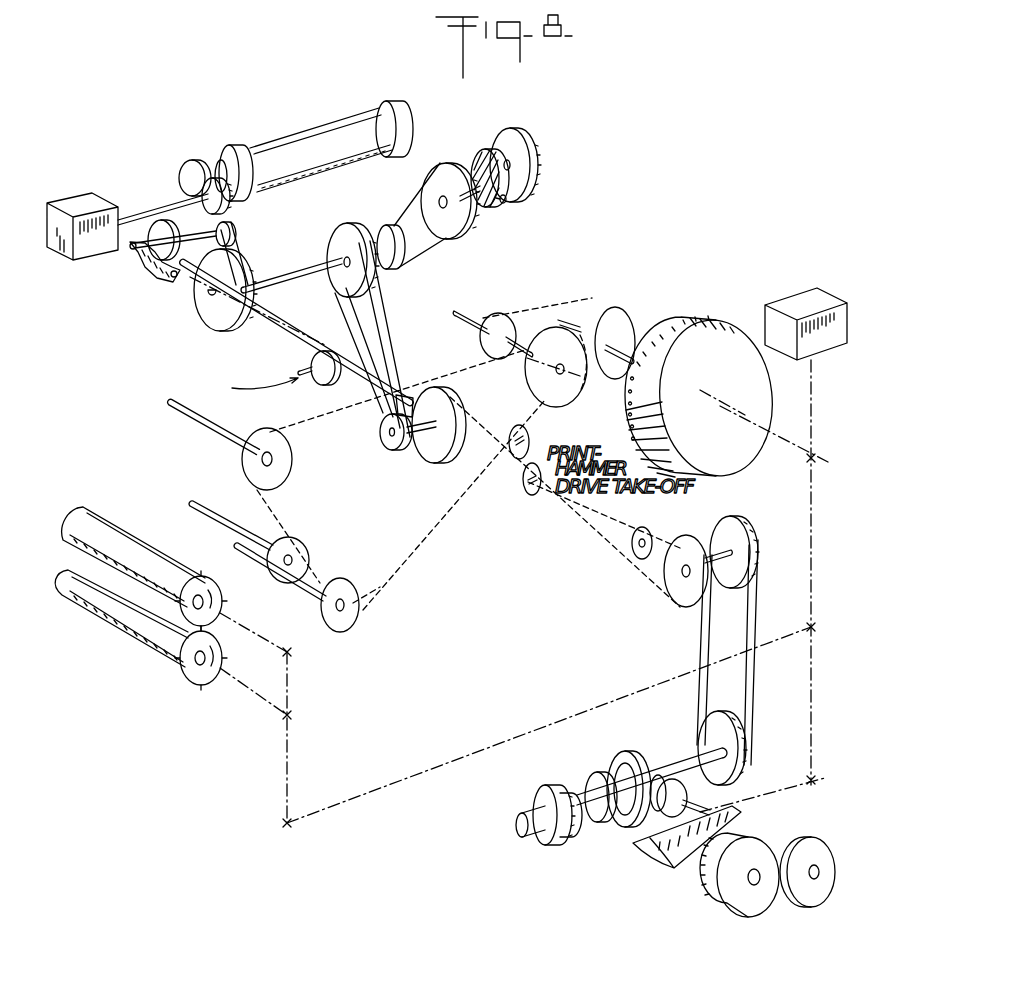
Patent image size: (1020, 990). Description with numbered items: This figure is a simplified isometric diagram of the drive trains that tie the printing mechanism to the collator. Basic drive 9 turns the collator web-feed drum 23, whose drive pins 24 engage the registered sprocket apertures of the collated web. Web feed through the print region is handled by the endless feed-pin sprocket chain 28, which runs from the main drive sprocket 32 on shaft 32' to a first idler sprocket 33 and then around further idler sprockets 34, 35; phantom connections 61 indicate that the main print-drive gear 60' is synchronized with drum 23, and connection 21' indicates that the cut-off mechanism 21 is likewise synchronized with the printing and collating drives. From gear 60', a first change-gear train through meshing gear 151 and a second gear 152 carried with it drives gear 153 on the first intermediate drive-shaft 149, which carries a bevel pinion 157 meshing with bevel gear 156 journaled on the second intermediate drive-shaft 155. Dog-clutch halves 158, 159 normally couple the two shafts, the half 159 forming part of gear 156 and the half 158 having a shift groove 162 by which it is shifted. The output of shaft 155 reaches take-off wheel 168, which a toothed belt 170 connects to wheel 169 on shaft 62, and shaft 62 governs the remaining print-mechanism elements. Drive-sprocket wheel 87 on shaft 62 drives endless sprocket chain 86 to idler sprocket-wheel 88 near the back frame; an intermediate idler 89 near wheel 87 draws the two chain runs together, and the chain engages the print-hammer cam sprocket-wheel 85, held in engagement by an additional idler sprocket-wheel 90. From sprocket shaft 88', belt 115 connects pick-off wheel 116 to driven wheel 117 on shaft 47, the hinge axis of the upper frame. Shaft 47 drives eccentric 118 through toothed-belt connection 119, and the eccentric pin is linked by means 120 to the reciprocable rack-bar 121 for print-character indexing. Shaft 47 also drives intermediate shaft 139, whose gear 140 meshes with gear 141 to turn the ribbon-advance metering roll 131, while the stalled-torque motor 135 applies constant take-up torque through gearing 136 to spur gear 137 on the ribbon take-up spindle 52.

The stalled-torque motor 135 is at (70, 201).
The take-up reel 52 is at (336, 121).
The spur gear 137 is at (194, 160).
The gearing 136 is at (212, 212).
The eccentric 118 is at (165, 221).
The link means 120 is at (142, 269).
The toothed-belt connection 119 is at (237, 262).
The driven wheel 117 is at (337, 272).
The hinge-axis shaft 47 is at (312, 240).
The toothed belt or sprocket-chain connection 115 is at (342, 300).
The rack-bar 121 is at (278, 323).
The ribbon-advance metering roll 131 is at (608, 173).
The intermediate drive shaft 139 is at (483, 210).
The gear 140 is at (505, 204).
The gear 141 is at (506, 128).
The basic drive 9 is at (808, 288).
The phantom connections 61 is at (812, 683).
The collator web-feed drum 23 is at (706, 359).
The drive pins 24 is at (692, 312).
The sprocket chain 28 is at (460, 444).
The sprocket shaft 32' is at (480, 335).
The main drive sprocket 32 is at (559, 357).
The first idler sprocket 33 is at (283, 456).
The idler sprocket 34 is at (283, 540).
The idler sprocket 35 is at (346, 578).
The cut-off mechanism 21 is at (141, 598).
The connection 21' is at (515, 720).
The pick-off wheel 116 is at (378, 446).
The sprocket shaft 88' is at (392, 448).
The idler sprocket-wheel 88 is at (434, 440).
The print-hammer cam sprocket-wheel 85 is at (510, 442).
The idler sprocket-wheel 90 is at (530, 495).
The sprocket-chain 86 is at (612, 516).
The intermediate idler 89 is at (648, 532).
The drive-sprocket wheel 87 is at (678, 597).
The drive shaft 62 is at (740, 522).
The wheel 169 is at (718, 592).
The toothed belt 170 is at (705, 638).
The take-off toothed wheel 168 is at (718, 714).
The first intermediate drive-shaft 149 is at (733, 807).
The shift groove 162 is at (568, 847).
The dog-clutch half 158 is at (562, 790).
The dog-clutch half 159 is at (592, 772).
The bevel gear 156 is at (622, 755).
The bevel pinion 157 is at (663, 775).
The second intermediate drive-shaft 155 is at (682, 780).
The print-drive gear 60' is at (671, 853).
The first meshing gear 151 is at (705, 880).
The second gear 152 is at (735, 905).
The gear 153 is at (806, 838).